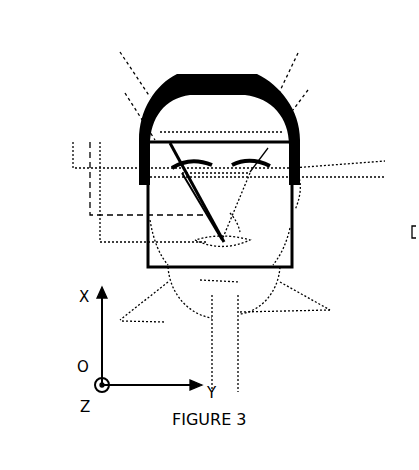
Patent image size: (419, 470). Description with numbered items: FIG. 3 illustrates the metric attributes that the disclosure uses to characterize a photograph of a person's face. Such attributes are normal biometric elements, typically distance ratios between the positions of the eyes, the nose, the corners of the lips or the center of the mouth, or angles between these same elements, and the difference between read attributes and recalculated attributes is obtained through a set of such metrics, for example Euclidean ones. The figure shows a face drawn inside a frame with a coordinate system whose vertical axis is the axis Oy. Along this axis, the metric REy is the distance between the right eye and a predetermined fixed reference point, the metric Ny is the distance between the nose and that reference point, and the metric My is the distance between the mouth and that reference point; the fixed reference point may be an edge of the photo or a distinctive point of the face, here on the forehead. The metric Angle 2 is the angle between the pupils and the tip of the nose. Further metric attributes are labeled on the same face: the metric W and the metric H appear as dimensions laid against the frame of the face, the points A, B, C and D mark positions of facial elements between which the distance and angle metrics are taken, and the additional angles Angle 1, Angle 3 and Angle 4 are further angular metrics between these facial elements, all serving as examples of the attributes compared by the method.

The head width W is at (221, 124).
The metric REy is at (71, 157).
The metric Ny is at (88, 178).
The metric My is at (98, 195).
The head height H is at (252, 194).
The eye-line point A is at (216, 165).
The point B is at (236, 206).
The point C is at (202, 206).
The point D is at (238, 222).
The head roll angle Angle 1 is at (338, 169).
The metric Angle2 Angle 2 is at (239, 115).
The head angle 3 Angle 3 is at (209, 68).
The neck angle Angle 4 is at (229, 343).